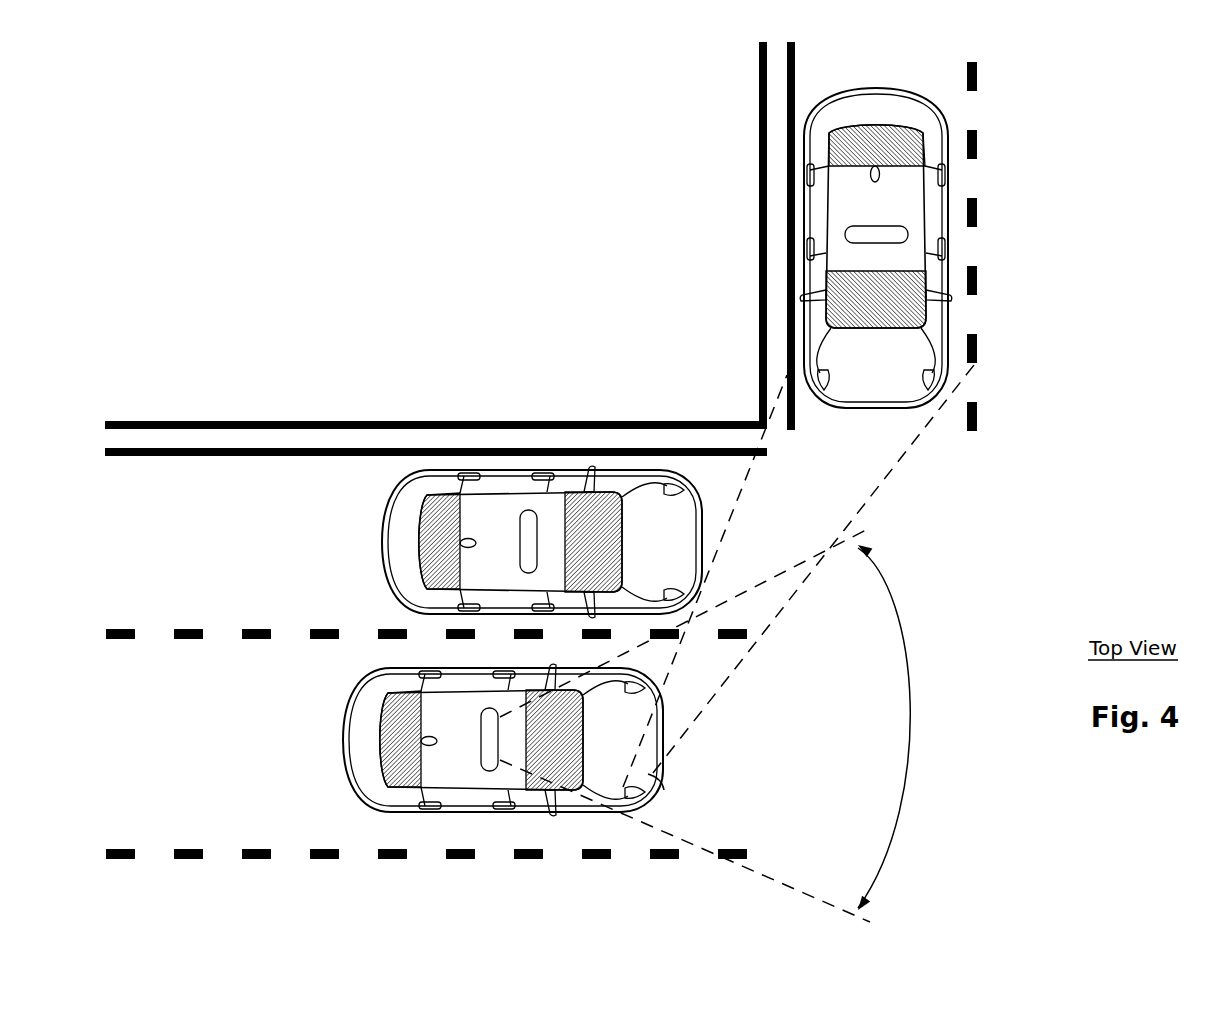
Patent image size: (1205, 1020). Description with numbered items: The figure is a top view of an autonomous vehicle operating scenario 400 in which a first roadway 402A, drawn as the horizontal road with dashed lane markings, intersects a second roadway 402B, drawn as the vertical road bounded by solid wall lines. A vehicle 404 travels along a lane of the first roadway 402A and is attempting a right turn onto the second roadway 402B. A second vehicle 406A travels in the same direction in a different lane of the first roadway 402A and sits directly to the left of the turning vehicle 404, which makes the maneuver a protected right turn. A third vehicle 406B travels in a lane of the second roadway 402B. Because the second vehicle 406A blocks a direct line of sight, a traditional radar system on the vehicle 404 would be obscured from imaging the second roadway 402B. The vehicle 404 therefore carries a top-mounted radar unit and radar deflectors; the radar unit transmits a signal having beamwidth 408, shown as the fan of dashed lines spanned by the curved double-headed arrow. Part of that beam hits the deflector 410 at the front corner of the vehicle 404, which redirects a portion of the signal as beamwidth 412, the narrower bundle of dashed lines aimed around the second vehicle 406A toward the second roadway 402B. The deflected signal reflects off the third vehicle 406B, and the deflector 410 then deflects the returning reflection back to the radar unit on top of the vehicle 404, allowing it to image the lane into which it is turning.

The autonomous vehicle operating scenario 400 is at (328, 73).
The first roadway 402A is at (262, 464).
The second roadway 402B is at (808, 80).
The vehicle 404 is at (377, 703).
The second vehicle 406A is at (410, 542).
The third vehicle 406B is at (820, 137).
The beamwidth 408 is at (705, 725).
The deflector 410 is at (655, 783).
The beamwidth 412 is at (750, 477).